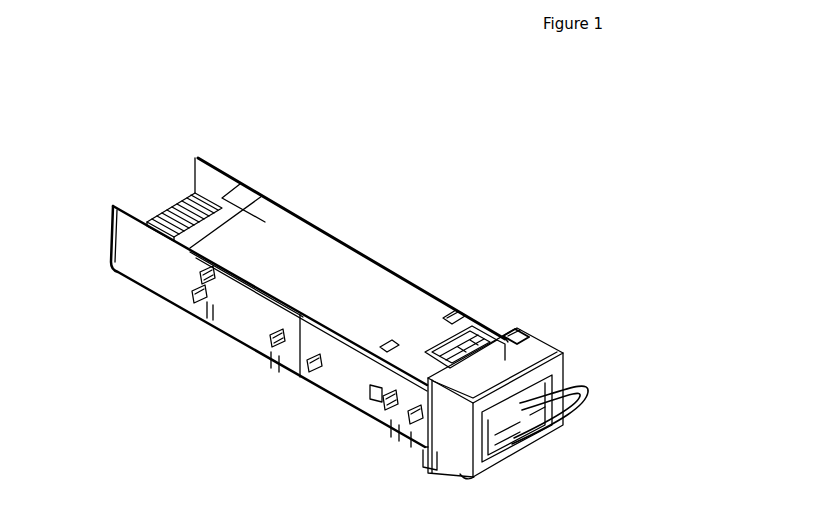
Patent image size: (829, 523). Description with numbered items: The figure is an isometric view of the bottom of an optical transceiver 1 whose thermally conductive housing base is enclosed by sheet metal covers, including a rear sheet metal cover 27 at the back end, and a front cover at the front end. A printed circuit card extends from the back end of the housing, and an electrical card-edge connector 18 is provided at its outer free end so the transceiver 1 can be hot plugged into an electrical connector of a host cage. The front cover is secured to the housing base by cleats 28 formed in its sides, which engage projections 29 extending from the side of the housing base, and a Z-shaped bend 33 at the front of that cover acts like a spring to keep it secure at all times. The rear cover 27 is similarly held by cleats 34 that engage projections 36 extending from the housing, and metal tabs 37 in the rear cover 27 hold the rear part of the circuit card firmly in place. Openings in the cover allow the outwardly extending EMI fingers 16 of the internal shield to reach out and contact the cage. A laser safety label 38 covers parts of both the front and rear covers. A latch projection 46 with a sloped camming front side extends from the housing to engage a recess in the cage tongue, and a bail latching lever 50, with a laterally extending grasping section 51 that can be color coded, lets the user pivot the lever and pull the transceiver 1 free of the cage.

The optical transceiver 1 is at (355, 206).
The EMI fingers 16 is at (451, 305).
The electrical card-edge connector 18 is at (185, 202).
The rear sheet metal cover 27 is at (232, 312).
The cleats 28 is at (383, 405).
The projections 29 is at (392, 412).
The Z-shaped bend 33 is at (523, 337).
The cleats 34 is at (275, 348).
The projections 36 is at (250, 395).
The metal tabs 37 is at (200, 285).
The laser safety label 38 is at (329, 281).
The latch projection 46 is at (458, 338).
The bail latching lever 50 is at (578, 391).
The grasping section 51 is at (563, 417).